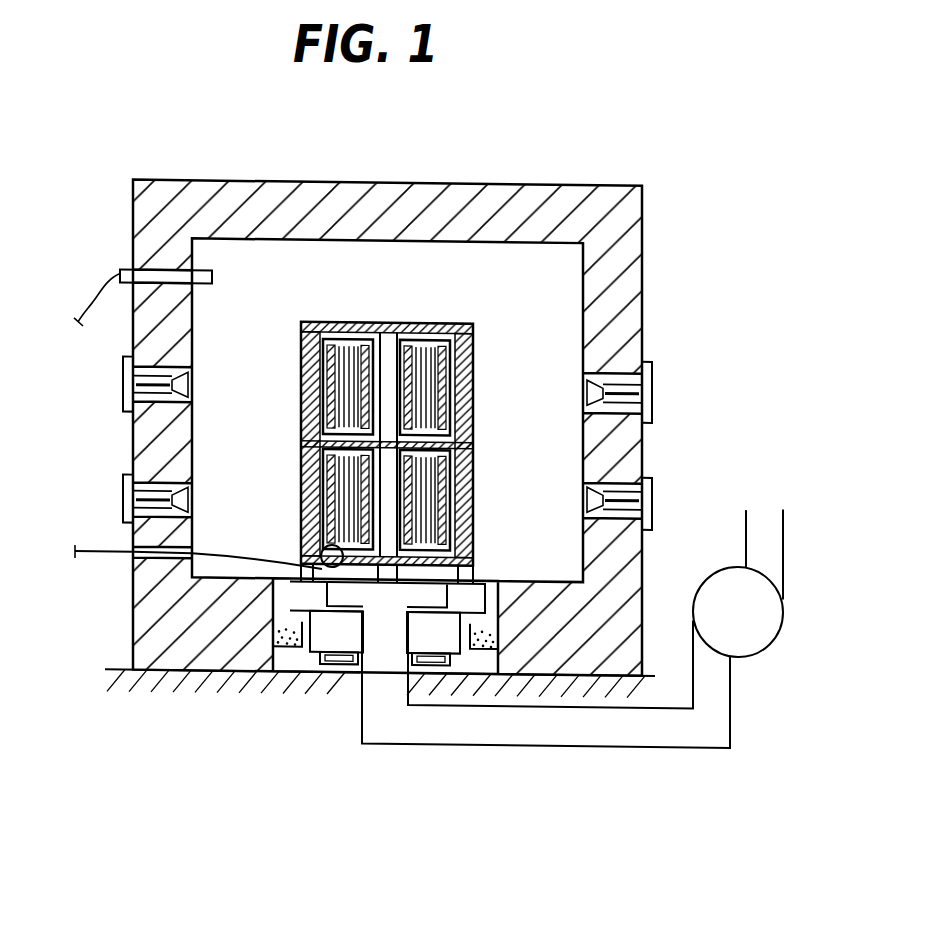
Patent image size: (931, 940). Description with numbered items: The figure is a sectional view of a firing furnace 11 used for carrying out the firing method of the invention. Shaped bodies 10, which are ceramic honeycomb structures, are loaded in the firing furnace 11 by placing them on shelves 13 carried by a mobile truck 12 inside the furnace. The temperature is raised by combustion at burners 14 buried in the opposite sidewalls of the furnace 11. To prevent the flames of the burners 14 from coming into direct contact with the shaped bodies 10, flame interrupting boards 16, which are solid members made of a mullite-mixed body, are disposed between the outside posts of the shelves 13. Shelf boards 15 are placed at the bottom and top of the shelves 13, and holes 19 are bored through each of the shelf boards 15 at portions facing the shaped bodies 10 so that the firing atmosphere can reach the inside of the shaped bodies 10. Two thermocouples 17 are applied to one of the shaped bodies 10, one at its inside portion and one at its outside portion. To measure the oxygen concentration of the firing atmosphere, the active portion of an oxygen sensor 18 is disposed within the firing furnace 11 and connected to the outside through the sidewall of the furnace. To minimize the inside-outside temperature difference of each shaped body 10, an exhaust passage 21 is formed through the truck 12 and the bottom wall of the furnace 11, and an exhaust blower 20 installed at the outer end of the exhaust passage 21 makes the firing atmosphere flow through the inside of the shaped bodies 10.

The shaped body 10 is at (345, 396).
The firing furnace 11 is at (632, 244).
The truck 12 is at (300, 656).
The shelf 13 is at (478, 358).
The burner 14 is at (137, 378).
The shelf board 15 is at (305, 318).
The flame interrupting board 16 is at (472, 386).
The thermocouple 17 is at (78, 544).
The oxygen sensor 18 is at (126, 266).
The hole 19 is at (352, 318).
The exhaust blower 20 is at (752, 627).
The exhaust passage 21 is at (495, 739).